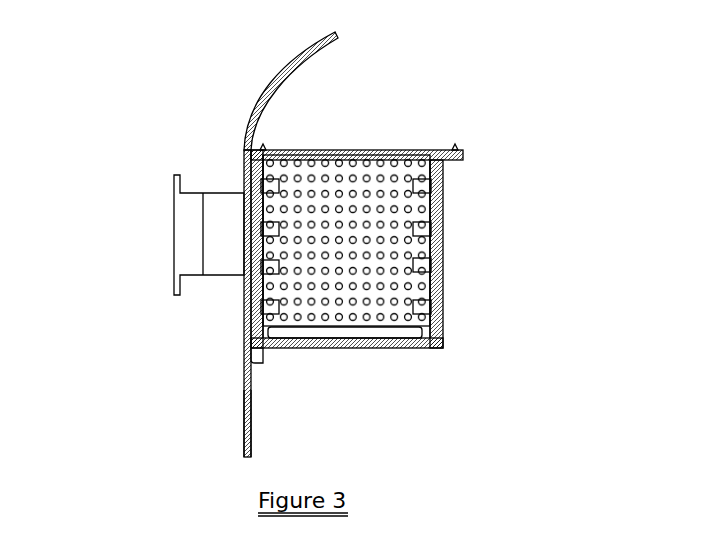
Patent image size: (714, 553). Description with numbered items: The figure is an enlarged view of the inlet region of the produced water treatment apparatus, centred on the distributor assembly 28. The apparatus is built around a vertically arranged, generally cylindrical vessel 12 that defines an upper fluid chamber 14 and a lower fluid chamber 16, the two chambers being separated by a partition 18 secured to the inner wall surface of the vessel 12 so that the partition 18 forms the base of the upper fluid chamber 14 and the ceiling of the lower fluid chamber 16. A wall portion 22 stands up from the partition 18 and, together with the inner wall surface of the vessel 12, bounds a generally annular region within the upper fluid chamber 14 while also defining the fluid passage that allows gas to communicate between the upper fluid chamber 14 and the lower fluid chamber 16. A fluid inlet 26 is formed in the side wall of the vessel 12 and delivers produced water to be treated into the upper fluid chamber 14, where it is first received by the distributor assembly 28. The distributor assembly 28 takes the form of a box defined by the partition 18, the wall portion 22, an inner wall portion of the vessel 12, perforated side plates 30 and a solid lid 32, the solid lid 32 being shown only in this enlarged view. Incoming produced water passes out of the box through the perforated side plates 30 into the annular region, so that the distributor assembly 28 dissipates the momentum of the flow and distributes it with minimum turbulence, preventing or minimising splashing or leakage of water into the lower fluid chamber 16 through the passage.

The vessel 12 is at (244, 388).
The upper fluid chamber 14 is at (300, 82).
The lower fluid chamber 16 is at (280, 428).
The partition 18 is at (418, 350).
The wall portion 22 is at (445, 276).
The fluid inlet 26 is at (215, 237).
The distributor assembly 28 is at (465, 175).
The perforated side plates 30 is at (440, 225).
The solid lid 32 is at (361, 151).